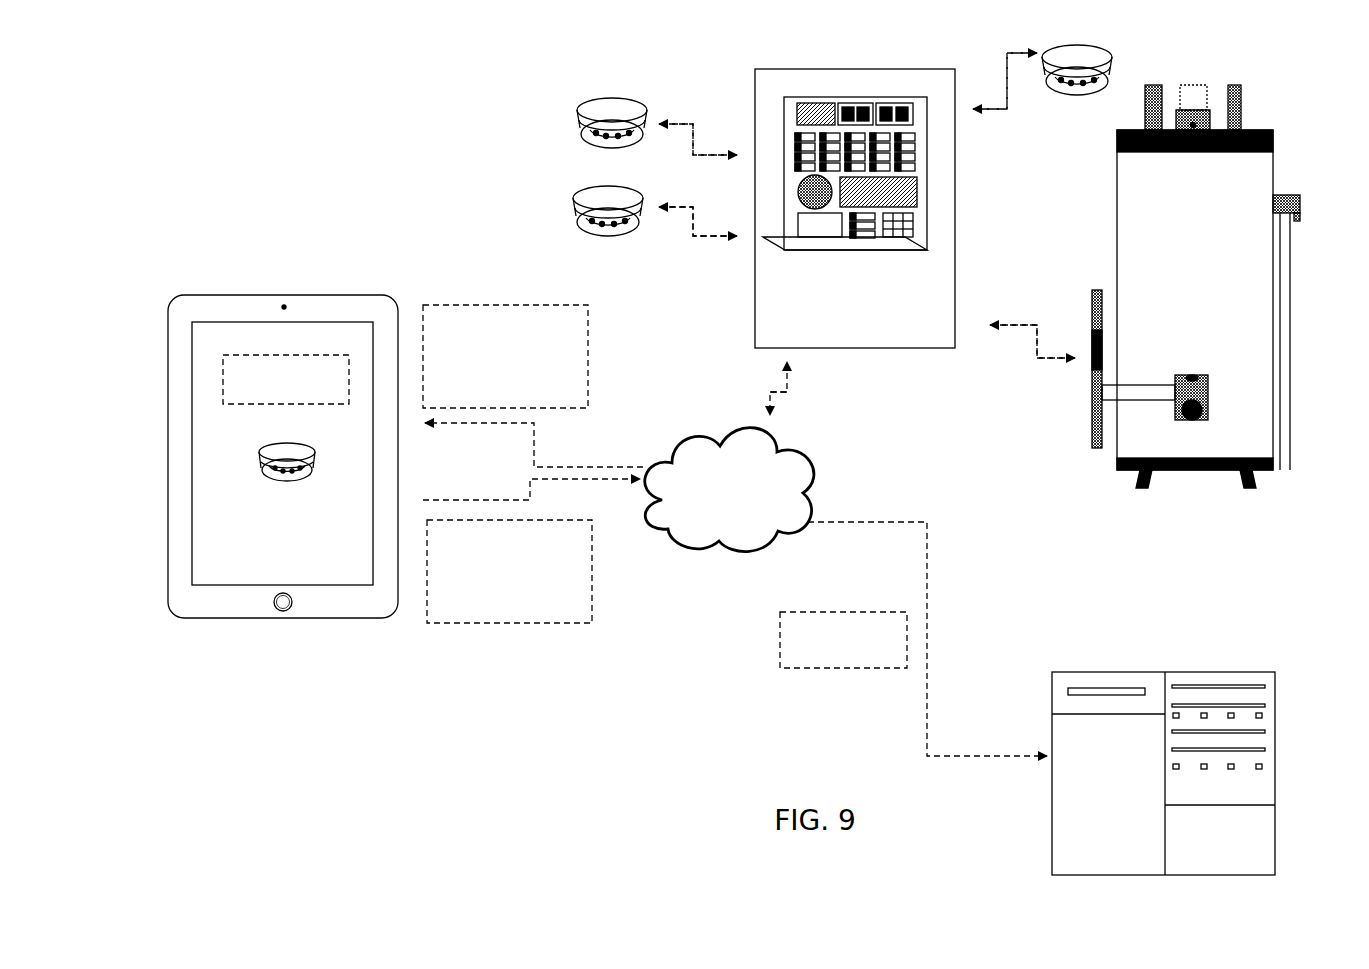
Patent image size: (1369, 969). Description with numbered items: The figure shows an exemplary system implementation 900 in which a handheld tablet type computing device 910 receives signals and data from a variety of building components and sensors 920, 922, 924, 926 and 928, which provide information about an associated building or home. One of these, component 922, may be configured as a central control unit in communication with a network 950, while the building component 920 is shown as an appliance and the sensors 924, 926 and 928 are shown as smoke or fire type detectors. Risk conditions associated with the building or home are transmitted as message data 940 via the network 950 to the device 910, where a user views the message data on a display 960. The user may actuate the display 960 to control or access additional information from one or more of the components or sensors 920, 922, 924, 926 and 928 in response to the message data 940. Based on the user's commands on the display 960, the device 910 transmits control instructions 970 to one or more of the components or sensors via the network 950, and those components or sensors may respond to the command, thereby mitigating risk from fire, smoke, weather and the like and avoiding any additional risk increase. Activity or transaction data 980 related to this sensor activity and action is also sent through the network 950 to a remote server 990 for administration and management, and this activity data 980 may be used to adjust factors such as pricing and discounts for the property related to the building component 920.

The system implementation 900 is at (315, 118).
The handheld tablet type computing device 910 is at (283, 456).
The building component 920 is at (1153, 477).
The component 922 is at (855, 208).
The sensor 924 is at (583, 108).
The sensor 926 is at (582, 197).
The sensor 928 is at (1107, 52).
The message data 940 is at (505, 356).
The network 950 is at (729, 490).
The display 960 is at (282, 453).
The control instructions 970 is at (509, 571).
The activity data 980 is at (843, 640).
The remote server 990 is at (1163, 773).